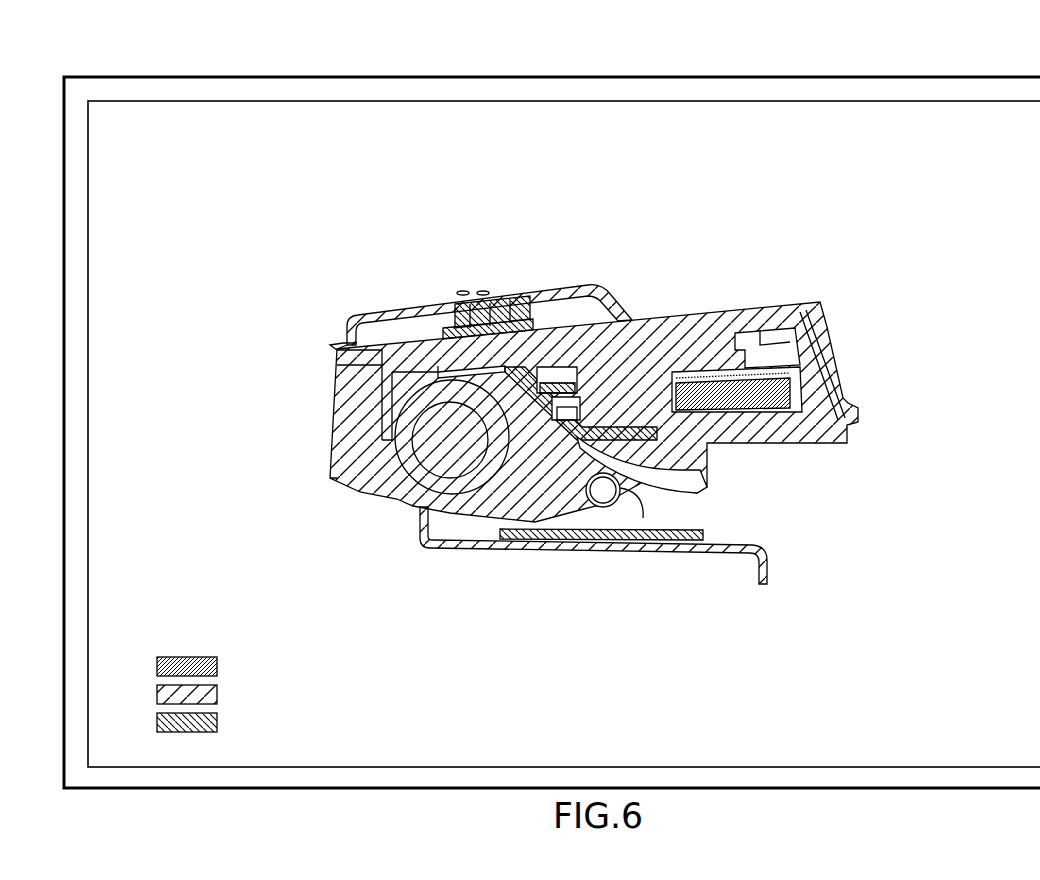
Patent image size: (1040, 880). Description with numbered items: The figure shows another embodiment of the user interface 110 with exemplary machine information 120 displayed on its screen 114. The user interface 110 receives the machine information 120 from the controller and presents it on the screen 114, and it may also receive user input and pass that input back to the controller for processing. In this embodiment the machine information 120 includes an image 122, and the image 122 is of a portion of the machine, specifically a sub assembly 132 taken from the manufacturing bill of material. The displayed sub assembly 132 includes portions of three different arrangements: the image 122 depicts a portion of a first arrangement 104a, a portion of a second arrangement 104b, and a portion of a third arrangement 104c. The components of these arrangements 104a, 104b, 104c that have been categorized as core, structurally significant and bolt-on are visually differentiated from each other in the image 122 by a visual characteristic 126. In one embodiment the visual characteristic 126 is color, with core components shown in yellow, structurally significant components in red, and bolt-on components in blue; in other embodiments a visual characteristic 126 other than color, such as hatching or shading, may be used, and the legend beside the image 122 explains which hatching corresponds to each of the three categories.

The user interface 110 is at (796, 70).
The screen 114 is at (876, 112).
The machine information 120 is at (331, 250).
The image 122 is at (628, 286).
The sub assembly 132 is at (816, 246).
The first arrangement 104a is at (331, 423).
The second arrangement 104b is at (540, 300).
The third arrangement 104c is at (740, 395).
The visual characteristic 126 is at (153, 657).